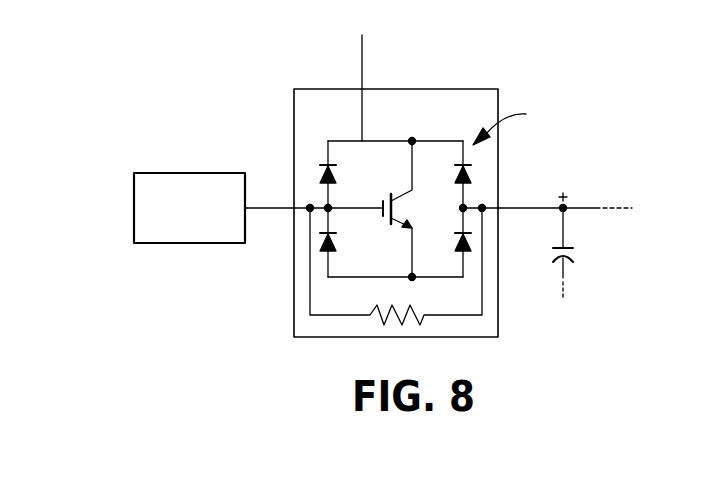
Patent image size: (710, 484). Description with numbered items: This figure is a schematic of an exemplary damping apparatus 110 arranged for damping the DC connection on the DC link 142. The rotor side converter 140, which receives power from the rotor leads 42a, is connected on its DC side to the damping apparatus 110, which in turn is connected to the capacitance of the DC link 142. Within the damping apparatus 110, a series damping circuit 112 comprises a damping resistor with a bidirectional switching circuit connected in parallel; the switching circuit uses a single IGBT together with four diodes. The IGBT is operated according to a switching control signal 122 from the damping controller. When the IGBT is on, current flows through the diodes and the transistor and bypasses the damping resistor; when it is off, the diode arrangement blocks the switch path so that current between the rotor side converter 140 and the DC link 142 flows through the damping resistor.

The rotor side converter 140 is at (190, 173).
The rotor leads 42a is at (273, 163).
The switching control signal 122 is at (362, 66).
The damping apparatus 110 is at (457, 89).
The series damping circuit 112 is at (310, 124).
The DC link 142 is at (580, 188).